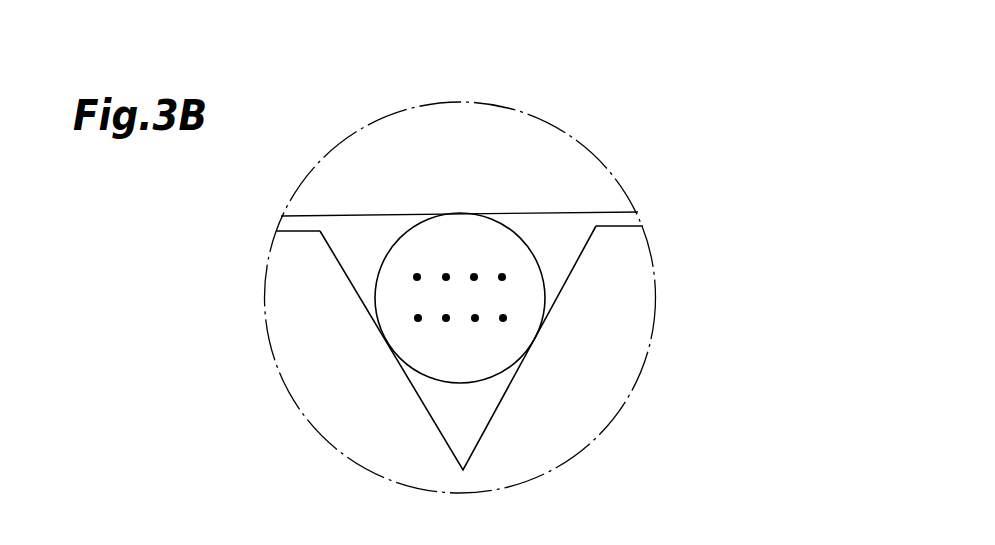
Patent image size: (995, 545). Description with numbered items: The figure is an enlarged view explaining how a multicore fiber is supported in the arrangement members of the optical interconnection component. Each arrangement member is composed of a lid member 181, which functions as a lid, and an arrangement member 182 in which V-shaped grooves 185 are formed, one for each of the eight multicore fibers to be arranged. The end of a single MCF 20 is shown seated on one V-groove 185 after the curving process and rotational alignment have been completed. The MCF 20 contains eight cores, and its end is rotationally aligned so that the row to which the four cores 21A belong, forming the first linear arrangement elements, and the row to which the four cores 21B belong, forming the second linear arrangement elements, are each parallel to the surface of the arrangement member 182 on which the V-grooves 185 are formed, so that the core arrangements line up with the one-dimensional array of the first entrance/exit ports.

The lid member 181 is at (565, 153).
The arrangement member 182 is at (642, 315).
The V-shaped groove 185 is at (571, 268).
The multicore fiber (MCF) 20 is at (420, 345).
The cores of the first row 21A is at (417, 277).
The cores of the second row 21B is at (418, 318).